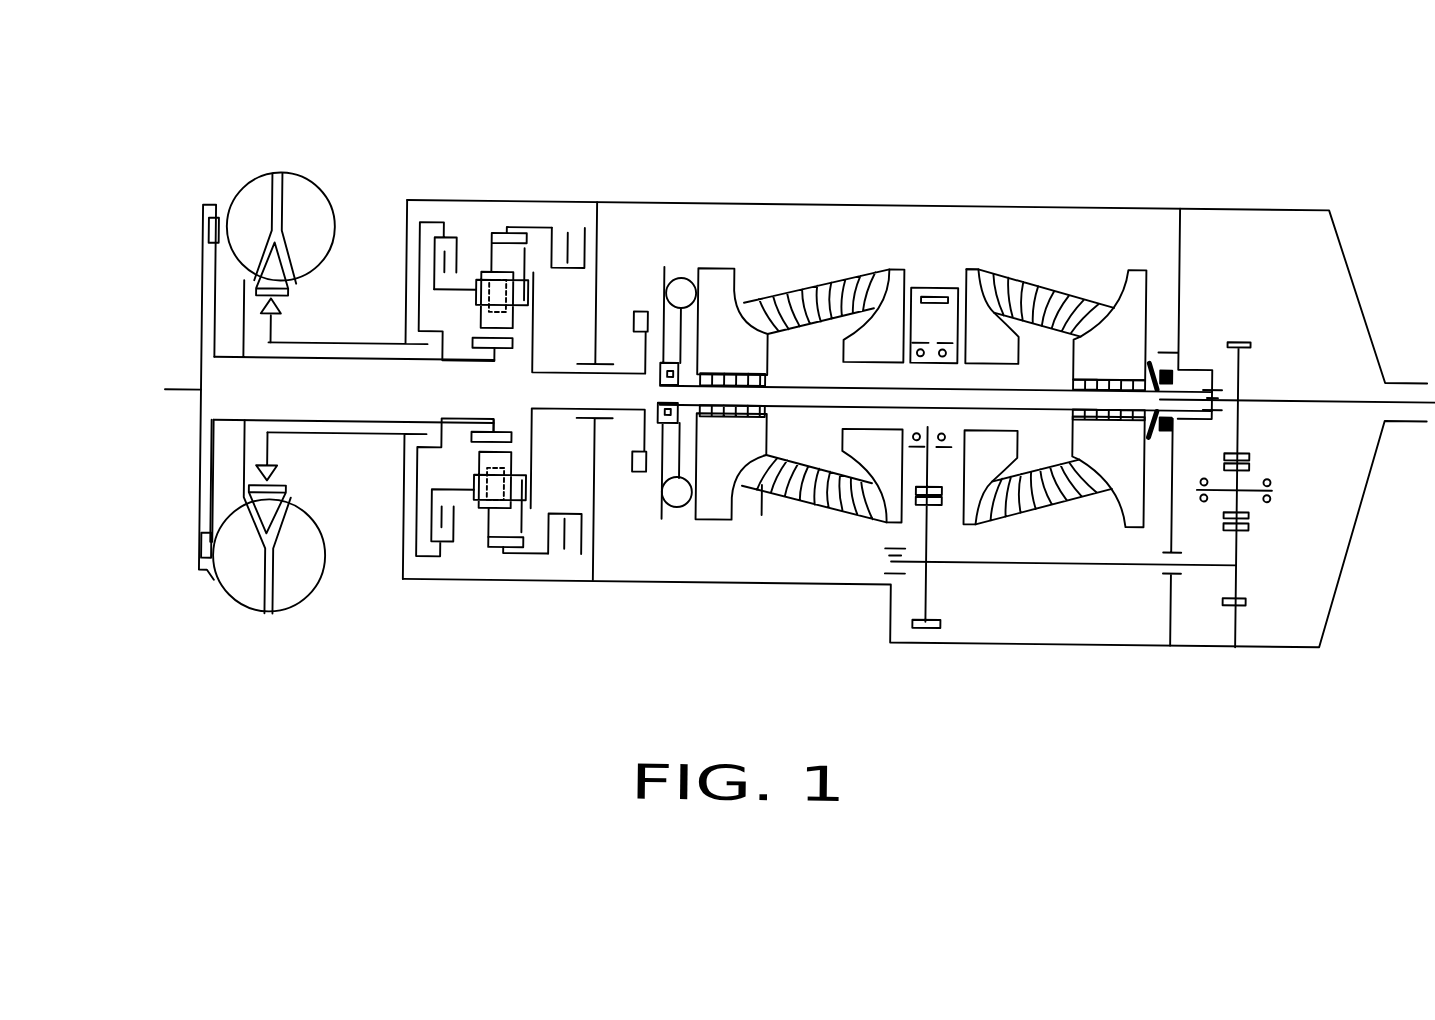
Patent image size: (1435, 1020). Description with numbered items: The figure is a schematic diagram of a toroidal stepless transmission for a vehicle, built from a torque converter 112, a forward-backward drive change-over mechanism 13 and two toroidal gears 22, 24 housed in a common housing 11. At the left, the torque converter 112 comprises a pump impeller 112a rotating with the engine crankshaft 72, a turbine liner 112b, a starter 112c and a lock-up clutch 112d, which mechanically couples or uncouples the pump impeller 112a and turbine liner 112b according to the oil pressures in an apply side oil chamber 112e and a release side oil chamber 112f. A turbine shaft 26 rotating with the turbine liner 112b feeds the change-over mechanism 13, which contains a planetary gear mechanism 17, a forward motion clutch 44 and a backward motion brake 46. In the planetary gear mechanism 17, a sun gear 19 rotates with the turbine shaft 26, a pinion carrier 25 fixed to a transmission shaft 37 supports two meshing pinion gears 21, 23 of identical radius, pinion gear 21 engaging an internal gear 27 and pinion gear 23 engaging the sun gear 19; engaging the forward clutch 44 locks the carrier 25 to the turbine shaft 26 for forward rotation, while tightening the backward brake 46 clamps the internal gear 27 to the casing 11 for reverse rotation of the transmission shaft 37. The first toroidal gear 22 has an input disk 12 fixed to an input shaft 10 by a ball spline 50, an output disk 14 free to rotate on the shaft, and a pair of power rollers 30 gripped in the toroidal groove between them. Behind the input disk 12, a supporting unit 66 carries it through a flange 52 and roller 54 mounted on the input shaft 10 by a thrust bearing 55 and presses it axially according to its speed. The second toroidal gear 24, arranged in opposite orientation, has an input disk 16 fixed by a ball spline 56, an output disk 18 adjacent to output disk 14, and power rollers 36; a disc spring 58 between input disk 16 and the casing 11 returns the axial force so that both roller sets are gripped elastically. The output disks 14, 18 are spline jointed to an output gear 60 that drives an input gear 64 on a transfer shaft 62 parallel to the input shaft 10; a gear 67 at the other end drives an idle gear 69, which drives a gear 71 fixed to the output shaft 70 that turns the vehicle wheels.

The input shaft 10 is at (763, 518).
The housing 11 is at (605, 584).
The input disk 12 is at (773, 245).
The forward-backward drive change-over mechanism 13 is at (508, 229).
The output disk 14 is at (887, 262).
The input disk 16 is at (1138, 263).
The planetary gear mechanism 17 is at (537, 483).
The output disk 18 is at (972, 262).
The sun gear 19 is at (512, 350).
The pinion gear 21 is at (520, 262).
The first toroidal gear 22 is at (930, 354).
The pinion gear 23 is at (478, 322).
The second toroidal gear 24 is at (1005, 242).
The pinion carrier 25 is at (445, 300).
The turbine shaft 26 is at (340, 423).
The internal gear 27 is at (495, 230).
The power rollers 30 is at (847, 274).
The power rollers 36 is at (1047, 281).
The transmission shaft 37 is at (550, 419).
The forward motion clutch 44 is at (450, 240).
The backward motion brake 46 is at (580, 223).
The ball spline 50 is at (768, 368).
The flange 52 is at (660, 290).
The roller 54 is at (692, 270).
The thrust bearing 55 is at (658, 411).
The ball spline 56 is at (1073, 406).
The disc spring 58 is at (1148, 354).
The output gear 60 is at (932, 296).
The transfer shaft 62 is at (1080, 557).
The input gear 64 is at (918, 626).
The supporting unit 66 is at (672, 252).
The gear 67 is at (1232, 599).
The idle gear 69 is at (1250, 505).
The output shaft 70 is at (1328, 391).
The gear 71 is at (1250, 336).
The crankshaft 72 is at (178, 395).
The torque converter 112 is at (296, 319).
The pump impeller 112a is at (310, 203).
The turbine liner 112b is at (240, 216).
The starter 112c is at (277, 283).
The lock-up clutch 112d is at (207, 268).
The apply side oil chamber 112e is at (227, 471).
The release side oil chamber 112f is at (205, 338).